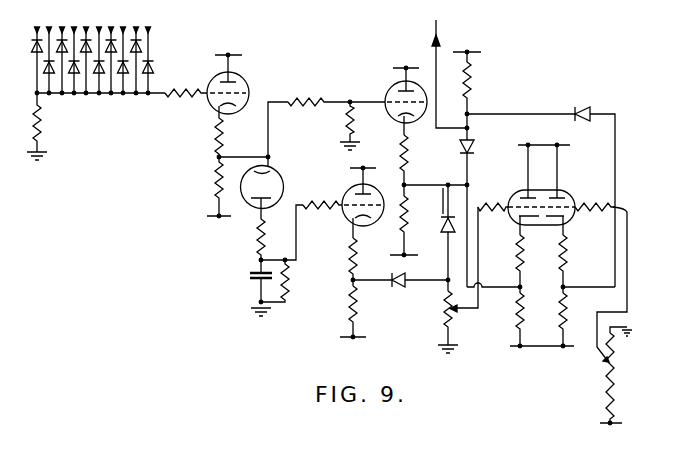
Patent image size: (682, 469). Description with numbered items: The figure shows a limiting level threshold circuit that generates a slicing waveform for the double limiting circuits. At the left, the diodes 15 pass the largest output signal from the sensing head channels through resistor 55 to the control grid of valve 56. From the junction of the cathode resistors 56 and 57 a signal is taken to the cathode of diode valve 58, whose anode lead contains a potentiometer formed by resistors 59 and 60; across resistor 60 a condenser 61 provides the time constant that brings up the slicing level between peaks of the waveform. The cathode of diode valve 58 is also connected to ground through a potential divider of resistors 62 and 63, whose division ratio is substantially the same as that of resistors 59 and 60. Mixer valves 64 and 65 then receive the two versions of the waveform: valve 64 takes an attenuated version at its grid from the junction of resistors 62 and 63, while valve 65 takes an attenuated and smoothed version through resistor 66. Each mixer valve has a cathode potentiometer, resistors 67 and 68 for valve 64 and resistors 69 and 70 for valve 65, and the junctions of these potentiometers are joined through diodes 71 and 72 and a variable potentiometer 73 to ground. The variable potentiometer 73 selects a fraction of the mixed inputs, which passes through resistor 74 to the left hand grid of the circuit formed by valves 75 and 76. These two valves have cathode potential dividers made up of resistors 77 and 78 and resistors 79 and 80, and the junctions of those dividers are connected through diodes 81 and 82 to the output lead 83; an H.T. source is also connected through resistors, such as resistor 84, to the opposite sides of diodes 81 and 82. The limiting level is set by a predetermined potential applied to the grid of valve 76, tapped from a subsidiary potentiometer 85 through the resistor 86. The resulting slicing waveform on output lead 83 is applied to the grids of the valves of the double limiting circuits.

The diodes 15 is at (91, 127).
The resistor 55 is at (186, 83).
The valve 56 is at (248, 86).
The cathode resistor 57 is at (210, 196).
The diode valve 58 is at (271, 181).
The resistor 59 is at (249, 244).
The resistor 60 is at (286, 281).
The condenser 61 is at (248, 290).
The resistor 62 is at (336, 112).
The resistor 63 is at (356, 126).
The mixer valve 64 is at (388, 90).
The mixer valve 65 is at (378, 220).
The resistor 66 is at (322, 213).
The cathode potentiometer resistor 67 is at (418, 165).
The cathode potentiometer resistor 68 is at (412, 226).
The cathode potentiometer resistor 69 is at (340, 262).
The cathode potentiometer resistor 70 is at (345, 322).
The diode 71 is at (447, 225).
The diode 72 is at (400, 288).
The variable potentiometer 73 is at (450, 280).
The resistor 74 is at (492, 198).
The valve 75 is at (516, 194).
The valve 76 is at (574, 196).
The resistor 77 is at (495, 264).
The resistor 78 is at (533, 329).
The resistor 79 is at (587, 264).
The resistor 80 is at (576, 319).
The diode 81 is at (481, 213).
The diode 82 is at (541, 185).
The output lead 83 is at (434, 58).
The resistor 84 is at (477, 85).
The potentiometer 85 is at (596, 350).
The resistor 86 is at (595, 217).